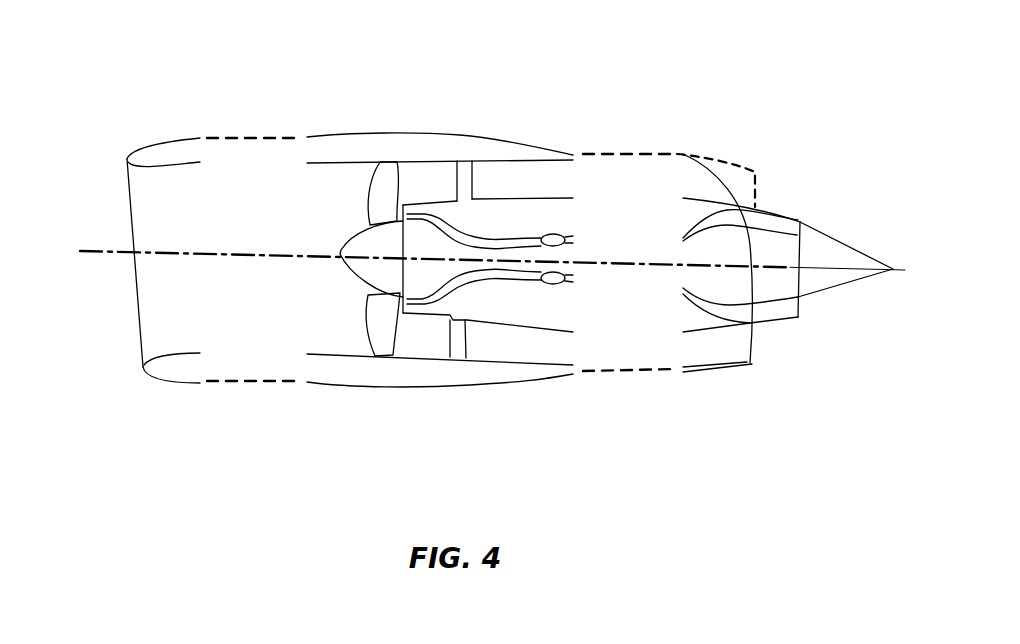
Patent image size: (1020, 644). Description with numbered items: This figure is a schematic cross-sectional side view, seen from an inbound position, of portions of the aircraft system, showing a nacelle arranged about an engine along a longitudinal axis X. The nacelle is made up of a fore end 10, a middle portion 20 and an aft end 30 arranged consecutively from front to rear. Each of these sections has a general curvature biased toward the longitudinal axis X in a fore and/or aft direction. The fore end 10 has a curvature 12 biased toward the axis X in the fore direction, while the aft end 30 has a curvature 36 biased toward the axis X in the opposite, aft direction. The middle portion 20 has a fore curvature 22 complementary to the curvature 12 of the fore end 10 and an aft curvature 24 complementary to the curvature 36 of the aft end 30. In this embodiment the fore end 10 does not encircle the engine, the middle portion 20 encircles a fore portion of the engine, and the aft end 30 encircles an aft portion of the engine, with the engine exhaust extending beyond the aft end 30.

The fore end 10 is at (130, 140).
The curvature 12 is at (145, 400).
The middle portion 20 is at (473, 118).
The fore curvature 22 is at (315, 412).
The aft curvature 24 is at (573, 407).
The aft end 30 is at (745, 388).
The curvature 36 is at (747, 145).
The longitudinal axis X is at (770, 265).